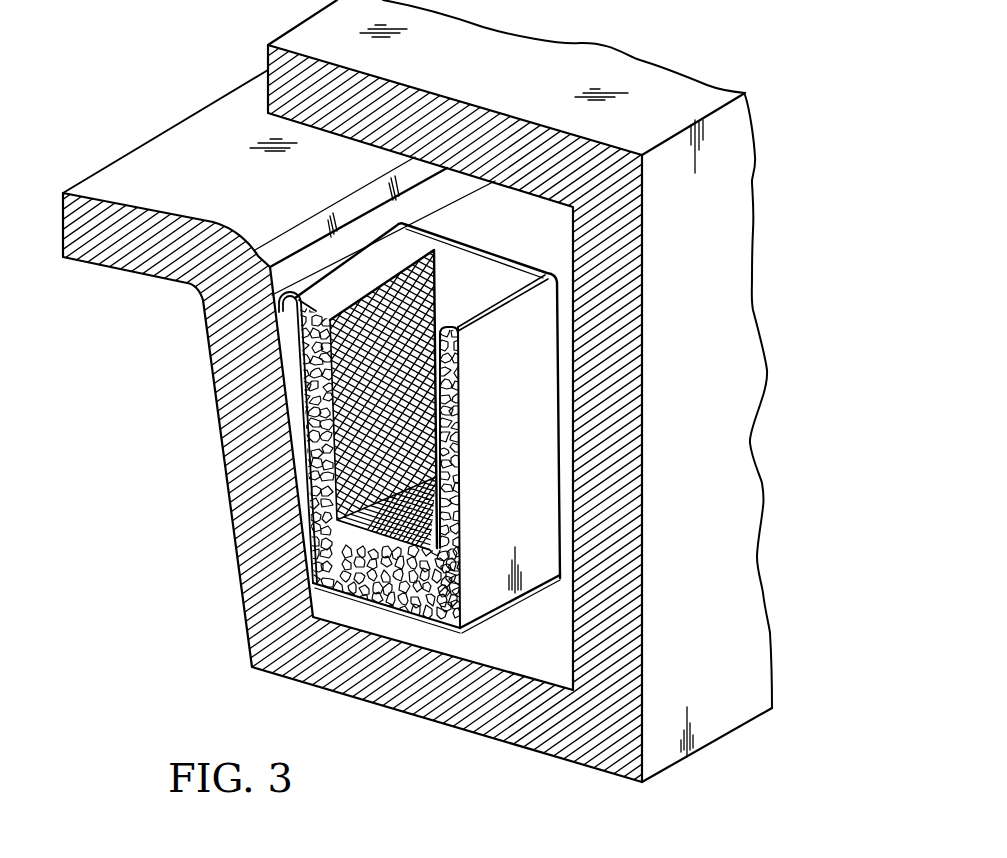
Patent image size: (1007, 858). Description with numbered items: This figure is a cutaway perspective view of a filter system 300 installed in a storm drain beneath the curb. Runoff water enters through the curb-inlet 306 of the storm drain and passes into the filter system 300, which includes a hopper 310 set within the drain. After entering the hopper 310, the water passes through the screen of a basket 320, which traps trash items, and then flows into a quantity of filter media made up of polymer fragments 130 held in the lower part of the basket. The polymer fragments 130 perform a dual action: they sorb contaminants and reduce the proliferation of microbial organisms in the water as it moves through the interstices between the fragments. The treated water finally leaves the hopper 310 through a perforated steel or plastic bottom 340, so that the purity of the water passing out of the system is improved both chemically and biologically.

The filter system 300 is at (132, 496).
The curb-inlet 306 is at (258, 194).
The hopper 310 is at (531, 419).
The basket 320 is at (447, 282).
The polymer fragments 130 is at (462, 520).
The perforated steel or plastic bottom 340 is at (434, 622).